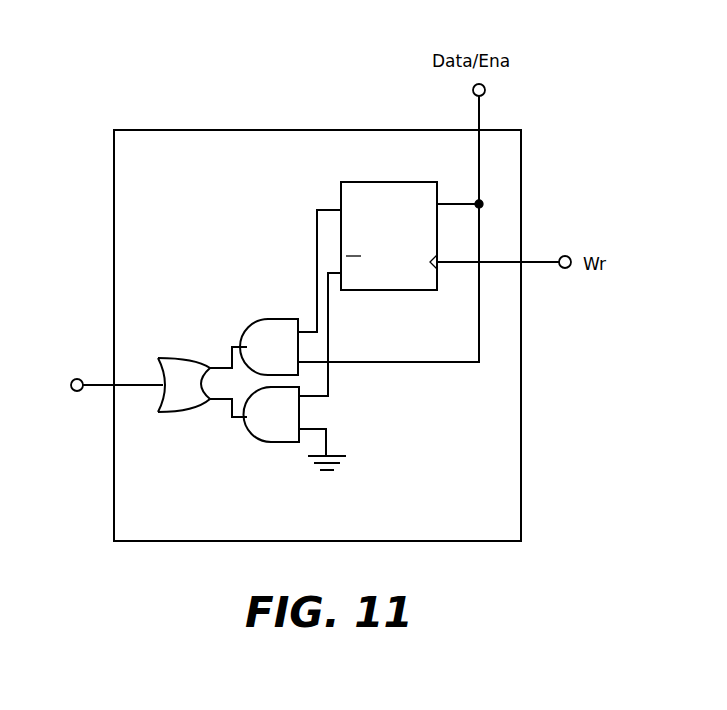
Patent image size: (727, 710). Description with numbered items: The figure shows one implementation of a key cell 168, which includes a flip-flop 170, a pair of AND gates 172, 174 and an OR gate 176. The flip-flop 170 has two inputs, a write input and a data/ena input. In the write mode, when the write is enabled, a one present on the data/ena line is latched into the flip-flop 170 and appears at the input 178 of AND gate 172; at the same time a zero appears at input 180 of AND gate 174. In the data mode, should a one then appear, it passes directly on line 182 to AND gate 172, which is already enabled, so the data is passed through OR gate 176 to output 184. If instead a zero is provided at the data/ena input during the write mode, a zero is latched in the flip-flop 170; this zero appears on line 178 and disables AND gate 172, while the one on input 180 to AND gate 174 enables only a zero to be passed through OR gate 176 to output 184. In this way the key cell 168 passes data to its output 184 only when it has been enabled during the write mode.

The key cell 168 is at (203, 124).
The flip-flop 170 is at (395, 181).
The AND gate 172 is at (264, 334).
The AND gate 174 is at (265, 431).
The OR gate 176 is at (181, 366).
The input of AND gate 172 178 is at (306, 332).
The input of AND gate 174 180 is at (320, 397).
The line 182 is at (385, 360).
The output 184 is at (80, 378).